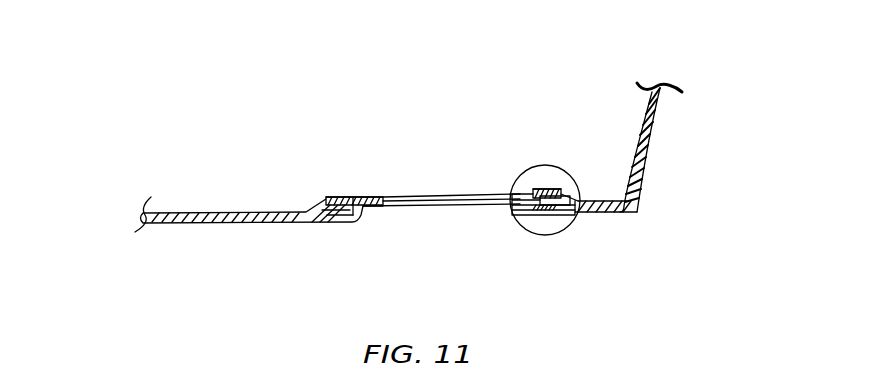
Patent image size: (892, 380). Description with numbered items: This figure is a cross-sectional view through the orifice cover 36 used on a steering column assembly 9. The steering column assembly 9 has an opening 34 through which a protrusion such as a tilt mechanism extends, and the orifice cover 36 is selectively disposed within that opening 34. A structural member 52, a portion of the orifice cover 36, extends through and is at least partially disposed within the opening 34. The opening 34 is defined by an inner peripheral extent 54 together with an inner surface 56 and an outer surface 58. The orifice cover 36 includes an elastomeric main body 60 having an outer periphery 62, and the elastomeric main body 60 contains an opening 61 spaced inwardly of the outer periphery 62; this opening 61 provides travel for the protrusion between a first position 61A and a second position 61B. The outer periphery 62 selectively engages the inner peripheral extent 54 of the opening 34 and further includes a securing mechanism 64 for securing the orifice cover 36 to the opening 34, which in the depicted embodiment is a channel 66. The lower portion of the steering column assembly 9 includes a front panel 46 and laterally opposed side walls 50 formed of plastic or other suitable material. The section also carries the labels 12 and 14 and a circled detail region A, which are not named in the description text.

The steering column assembly 9 is at (569, 76).
The bottom wall 12 is at (205, 210).
The side wall 14 is at (648, 166).
The opening 34 is at (468, 212).
The orifice cover 36 is at (334, 224).
The front panel 46 is at (663, 120).
The laterally opposed side walls 50 is at (172, 226).
The structural member 52 is at (520, 196).
The inner peripheral extent 54 is at (352, 224).
The inner surface 56 is at (334, 198).
The outer surface 58 is at (323, 223).
The elastomeric main body 60 is at (365, 224).
The opening 61 is at (461, 217).
The first position 61A is at (392, 197).
The second position 61B is at (472, 196).
The outer periphery 62 is at (357, 197).
The securing mechanism 64 is at (343, 197).
The channel 66 is at (562, 201).
The detail area A is at (515, 230).